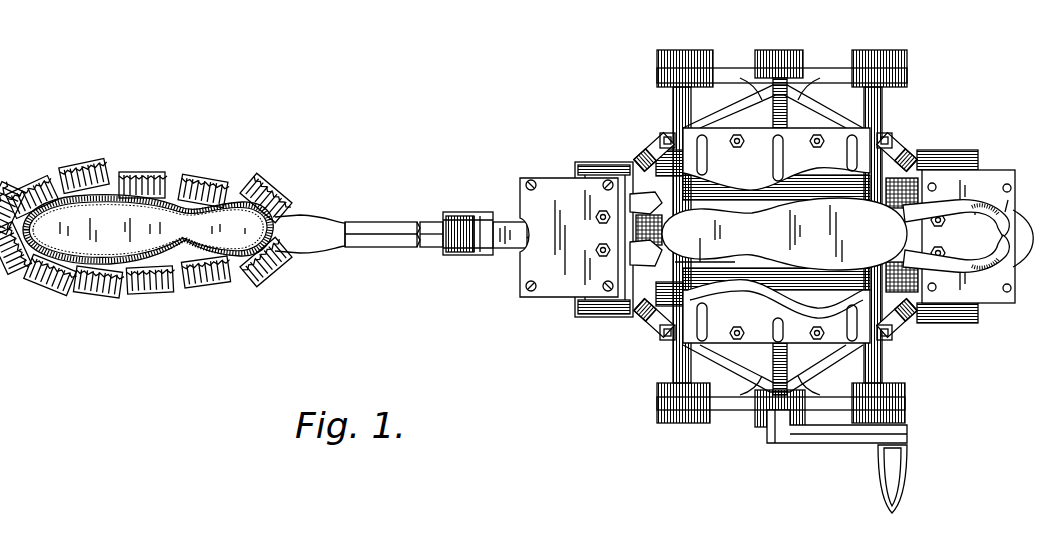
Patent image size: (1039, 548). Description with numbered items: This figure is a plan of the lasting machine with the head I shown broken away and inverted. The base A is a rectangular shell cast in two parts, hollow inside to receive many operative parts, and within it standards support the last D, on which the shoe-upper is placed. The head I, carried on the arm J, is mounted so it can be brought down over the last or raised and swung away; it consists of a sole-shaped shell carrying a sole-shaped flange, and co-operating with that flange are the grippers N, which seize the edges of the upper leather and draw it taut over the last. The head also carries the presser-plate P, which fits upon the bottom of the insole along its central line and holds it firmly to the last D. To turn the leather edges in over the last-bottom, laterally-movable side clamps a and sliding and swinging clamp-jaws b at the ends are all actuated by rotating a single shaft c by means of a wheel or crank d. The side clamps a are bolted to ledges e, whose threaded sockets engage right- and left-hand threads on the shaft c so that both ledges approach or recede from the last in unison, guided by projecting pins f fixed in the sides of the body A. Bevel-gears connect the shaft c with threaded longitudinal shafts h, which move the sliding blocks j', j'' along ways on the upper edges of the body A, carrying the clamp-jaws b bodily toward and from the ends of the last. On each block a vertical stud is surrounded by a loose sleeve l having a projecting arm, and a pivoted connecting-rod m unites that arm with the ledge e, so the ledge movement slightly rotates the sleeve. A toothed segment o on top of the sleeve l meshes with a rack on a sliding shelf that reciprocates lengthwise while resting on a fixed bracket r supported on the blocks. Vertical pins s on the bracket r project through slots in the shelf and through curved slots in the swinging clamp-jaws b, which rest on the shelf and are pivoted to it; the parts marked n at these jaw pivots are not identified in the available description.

The head I is at (168, 162).
The presser-plate P is at (148, 229).
The grippers N is at (280, 184).
The arm J is at (323, 241).
The base A is at (563, 299).
The sliding block j' is at (596, 234).
The sliding block j'' is at (966, 234).
The ledges e is at (720, 67).
The projecting pins f is at (678, 105).
The shaft c is at (788, 111).
The side clamps a is at (776, 235).
The last D is at (784, 234).
The longitudinal shafts h is at (705, 250).
The clamp-jaws b is at (800, 237).
The connecting-rod m is at (657, 140).
The wheel or crank d is at (843, 441).
The pivot nuts n is at (938, 237).
The toothed segment o is at (956, 230).
The vertical pins s is at (985, 268).
The bracket r is at (1008, 258).
The sleeve l is at (1003, 200).